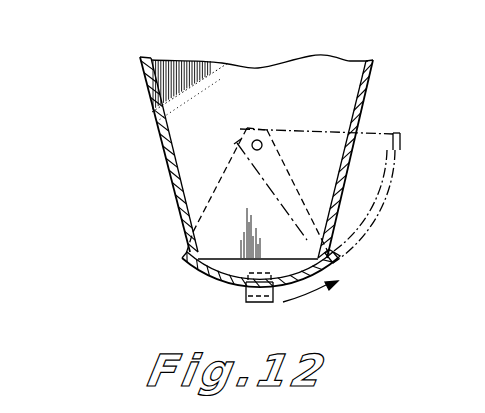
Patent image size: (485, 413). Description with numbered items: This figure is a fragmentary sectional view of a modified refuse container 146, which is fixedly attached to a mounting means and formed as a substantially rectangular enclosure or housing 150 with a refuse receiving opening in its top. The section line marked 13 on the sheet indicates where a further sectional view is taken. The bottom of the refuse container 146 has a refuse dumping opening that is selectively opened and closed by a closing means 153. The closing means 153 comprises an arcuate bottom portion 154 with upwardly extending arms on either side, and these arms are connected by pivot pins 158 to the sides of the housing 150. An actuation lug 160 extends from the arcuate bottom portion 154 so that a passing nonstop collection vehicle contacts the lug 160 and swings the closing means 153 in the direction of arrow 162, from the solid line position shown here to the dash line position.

The section line 13- 13 is at (130, 54).
The refuse container 146 is at (371, 83).
The housing 150 is at (358, 104).
The closing means 153 is at (206, 276).
The arcuate bottom portion 154 is at (333, 263).
The pivot pins 158 is at (258, 140).
The actuation lug 160 is at (246, 298).
The arrow 162 is at (308, 300).